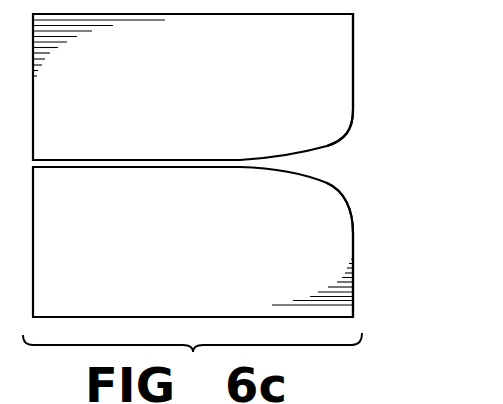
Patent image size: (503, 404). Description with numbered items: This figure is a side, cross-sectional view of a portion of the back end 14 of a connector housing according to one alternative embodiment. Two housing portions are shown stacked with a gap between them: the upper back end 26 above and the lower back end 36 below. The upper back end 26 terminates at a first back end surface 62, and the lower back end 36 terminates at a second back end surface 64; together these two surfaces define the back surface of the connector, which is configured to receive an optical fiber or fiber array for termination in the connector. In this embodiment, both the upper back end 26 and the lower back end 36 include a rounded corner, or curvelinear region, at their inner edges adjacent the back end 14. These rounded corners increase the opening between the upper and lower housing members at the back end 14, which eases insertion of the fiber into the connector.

The back end 14 is at (235, 164).
The upper back end 26 is at (203, 97).
The lower back end 36 is at (203, 252).
The first back end surface 62 is at (353, 83).
The second back end surface 64 is at (353, 251).